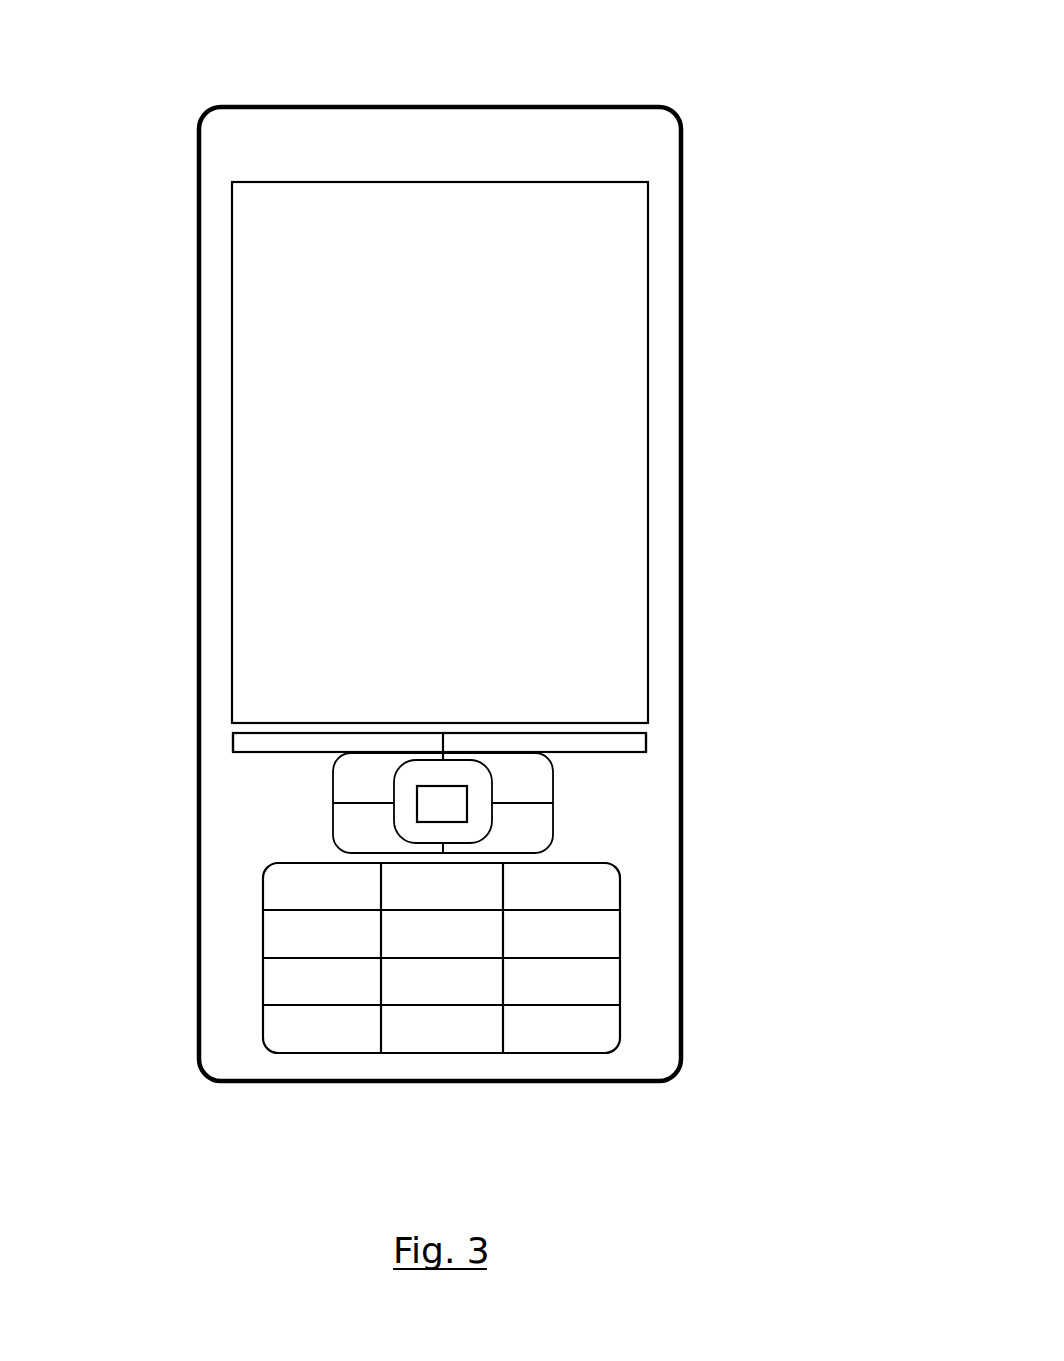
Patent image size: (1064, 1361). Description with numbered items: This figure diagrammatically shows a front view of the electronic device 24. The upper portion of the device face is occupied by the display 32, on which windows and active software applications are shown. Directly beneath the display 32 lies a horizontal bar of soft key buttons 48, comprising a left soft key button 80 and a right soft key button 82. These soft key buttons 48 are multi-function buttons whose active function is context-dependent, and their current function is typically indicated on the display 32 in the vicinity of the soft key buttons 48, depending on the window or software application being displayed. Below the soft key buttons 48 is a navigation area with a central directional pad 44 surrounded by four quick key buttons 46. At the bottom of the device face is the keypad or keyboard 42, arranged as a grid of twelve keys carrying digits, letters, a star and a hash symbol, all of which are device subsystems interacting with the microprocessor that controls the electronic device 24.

The electronic device 24 is at (656, 62).
The display 32 is at (558, 275).
The left soft key button 80 is at (300, 743).
The soft key buttons 48 is at (272, 743).
The right soft key button 82 is at (600, 742).
The quick key buttons 46 is at (373, 779).
The directional pad 44 is at (467, 770).
The keypad or keyboard 42 is at (632, 880).